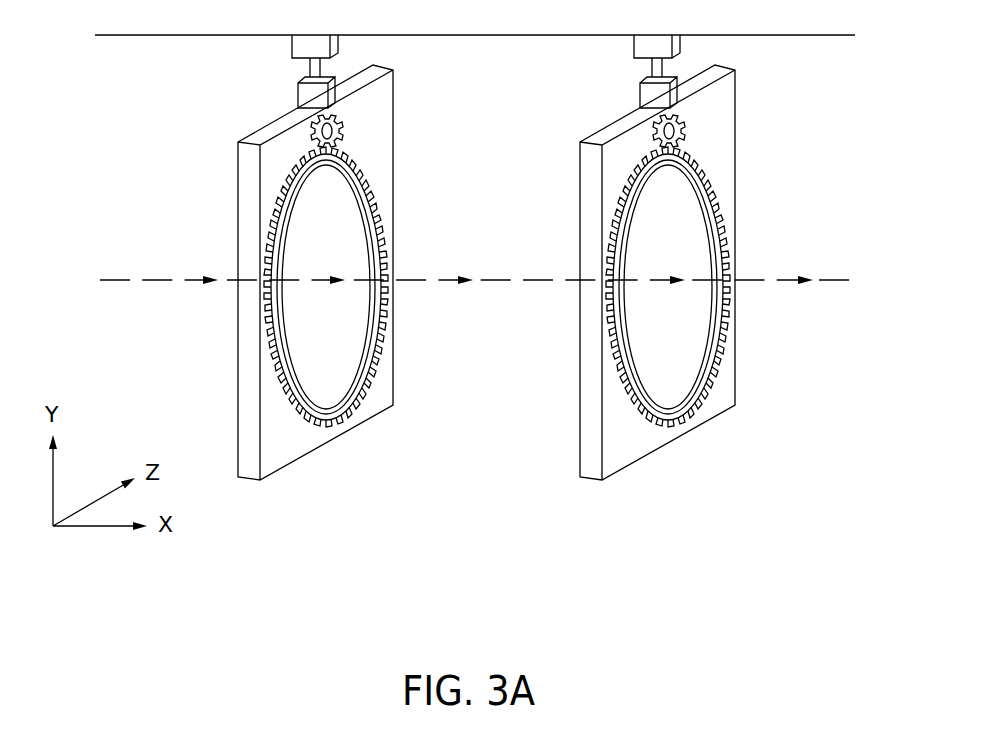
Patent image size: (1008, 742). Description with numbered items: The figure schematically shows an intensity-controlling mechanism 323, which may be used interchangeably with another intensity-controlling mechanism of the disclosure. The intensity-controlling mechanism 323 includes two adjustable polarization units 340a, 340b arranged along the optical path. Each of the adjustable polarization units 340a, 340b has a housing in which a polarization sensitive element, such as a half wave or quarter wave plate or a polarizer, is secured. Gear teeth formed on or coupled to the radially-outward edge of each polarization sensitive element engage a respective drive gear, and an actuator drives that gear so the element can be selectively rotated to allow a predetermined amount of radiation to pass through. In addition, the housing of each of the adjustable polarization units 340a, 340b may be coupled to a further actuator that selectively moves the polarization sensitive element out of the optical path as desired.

The intensity-controlling mechanism 323 is at (812, 142).
The adjustable polarization unit 340a is at (226, 215).
The adjustable polarization unit 340b is at (653, 257).